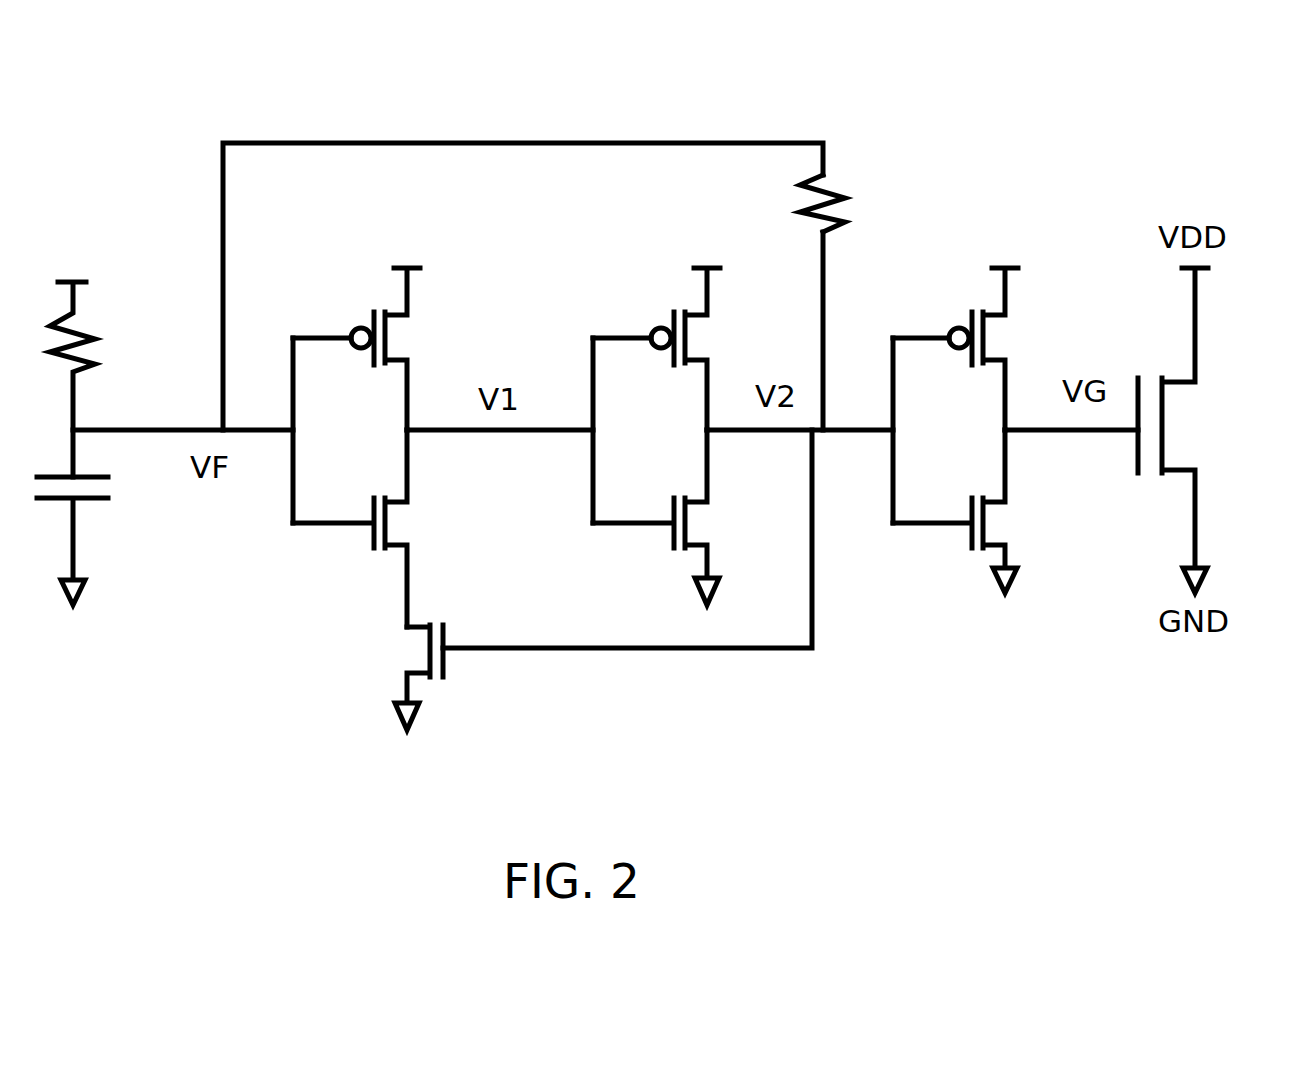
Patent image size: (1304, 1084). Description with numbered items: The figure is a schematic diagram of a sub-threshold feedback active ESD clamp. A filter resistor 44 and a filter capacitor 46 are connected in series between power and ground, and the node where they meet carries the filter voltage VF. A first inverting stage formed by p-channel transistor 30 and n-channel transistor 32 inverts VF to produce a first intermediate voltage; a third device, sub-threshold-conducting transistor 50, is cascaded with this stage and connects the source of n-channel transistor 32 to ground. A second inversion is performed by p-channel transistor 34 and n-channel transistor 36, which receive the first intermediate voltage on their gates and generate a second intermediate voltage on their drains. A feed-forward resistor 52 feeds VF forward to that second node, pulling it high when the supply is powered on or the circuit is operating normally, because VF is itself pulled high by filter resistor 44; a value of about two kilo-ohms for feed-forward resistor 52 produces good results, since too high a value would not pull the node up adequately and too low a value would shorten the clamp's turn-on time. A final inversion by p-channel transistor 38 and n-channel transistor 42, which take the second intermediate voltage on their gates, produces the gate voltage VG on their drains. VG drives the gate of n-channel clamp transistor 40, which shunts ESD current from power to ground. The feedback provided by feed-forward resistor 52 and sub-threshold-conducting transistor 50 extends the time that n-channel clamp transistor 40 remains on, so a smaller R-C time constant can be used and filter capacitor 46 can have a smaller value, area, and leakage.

The p-channel transistor 30 is at (391, 333).
The n-channel transistor 32 is at (389, 531).
The p-channel transistor 34 is at (691, 333).
The n-channel transistor 36 is at (687, 531).
The p-channel transistor 38 is at (988, 333).
The n-channel clamp transistor 40 is at (1170, 424).
The n-channel transistor 42 is at (981, 531).
The filter resistor 44 is at (93, 338).
The filter capacitor 46 is at (83, 498).
The sub-threshold-conducting transistor 50 is at (420, 650).
The feed-forward resistor 52 is at (845, 199).